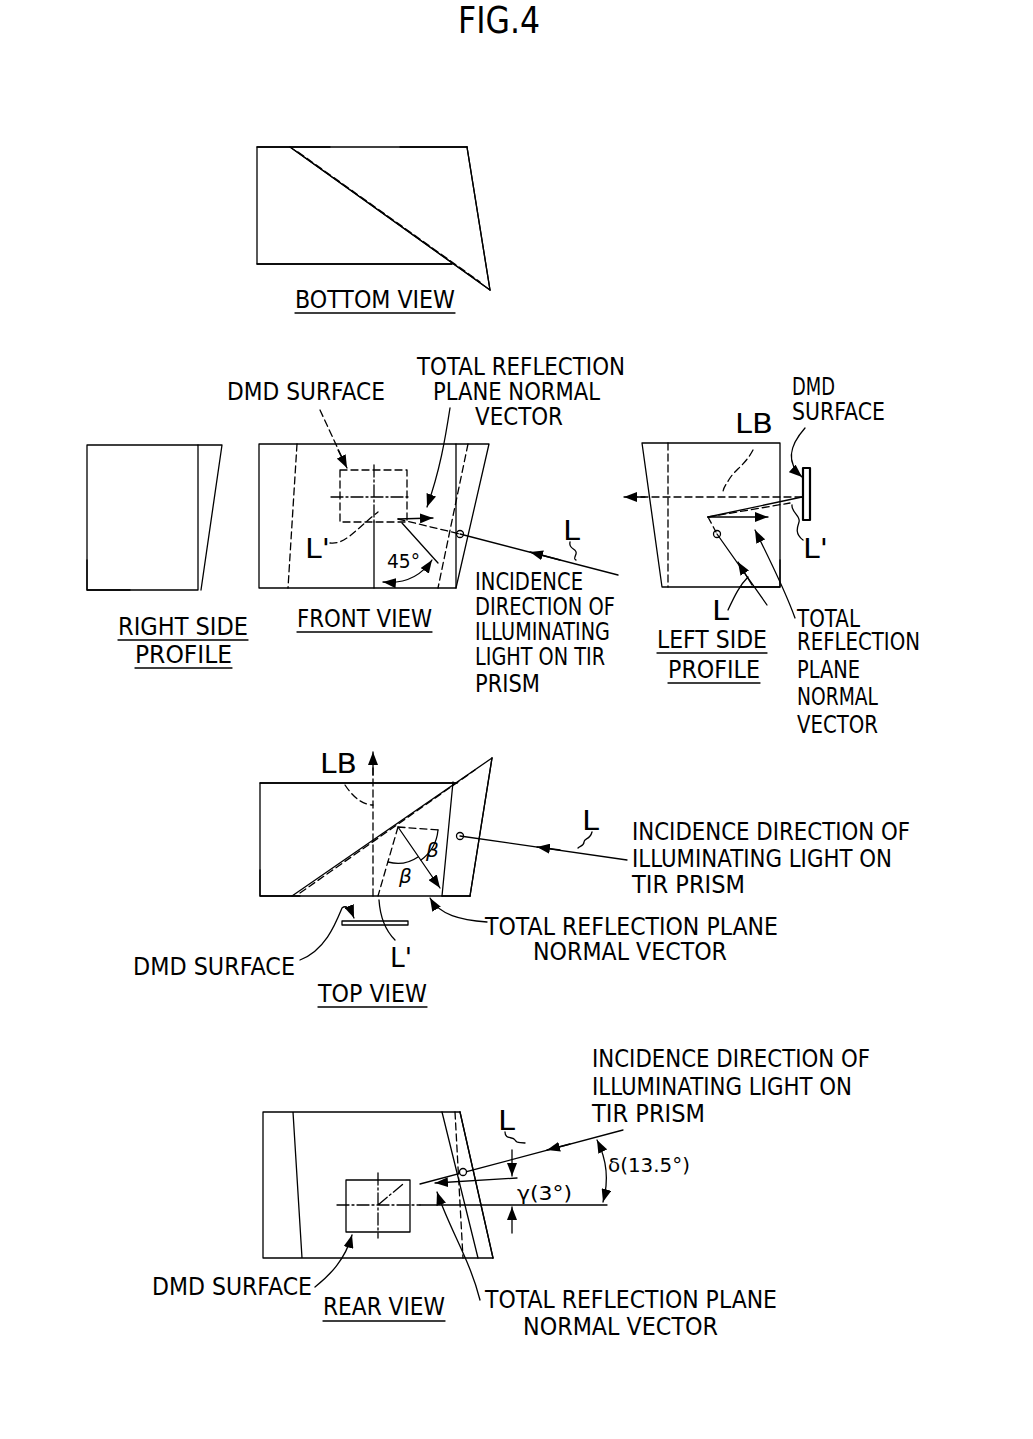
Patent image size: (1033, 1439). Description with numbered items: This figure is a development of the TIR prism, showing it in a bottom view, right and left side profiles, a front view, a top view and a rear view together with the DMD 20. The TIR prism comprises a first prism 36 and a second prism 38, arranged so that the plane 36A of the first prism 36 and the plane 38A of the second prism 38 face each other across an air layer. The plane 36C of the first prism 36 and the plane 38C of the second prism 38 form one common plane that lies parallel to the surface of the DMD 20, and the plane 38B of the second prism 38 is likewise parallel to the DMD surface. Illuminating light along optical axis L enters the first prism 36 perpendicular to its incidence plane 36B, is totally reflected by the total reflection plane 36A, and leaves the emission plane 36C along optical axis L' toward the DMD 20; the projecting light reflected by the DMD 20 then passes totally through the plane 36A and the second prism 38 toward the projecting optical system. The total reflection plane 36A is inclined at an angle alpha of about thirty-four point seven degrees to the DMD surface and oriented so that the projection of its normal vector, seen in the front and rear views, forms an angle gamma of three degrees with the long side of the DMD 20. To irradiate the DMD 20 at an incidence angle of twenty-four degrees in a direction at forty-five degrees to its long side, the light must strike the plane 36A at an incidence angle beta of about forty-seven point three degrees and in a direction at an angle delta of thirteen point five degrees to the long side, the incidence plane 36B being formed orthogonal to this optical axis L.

The DMD 20 is at (364, 477).
The first prism 36 is at (468, 188).
The total reflection plane 36A is at (396, 226).
The incidence plane 36B is at (482, 233).
The emission plane 36C is at (407, 147).
The second prism 38 is at (268, 190).
The plane of the second prism 38A is at (358, 194).
The plane of the second prism 38B is at (287, 268).
The plane of the second prism 38C is at (275, 147).